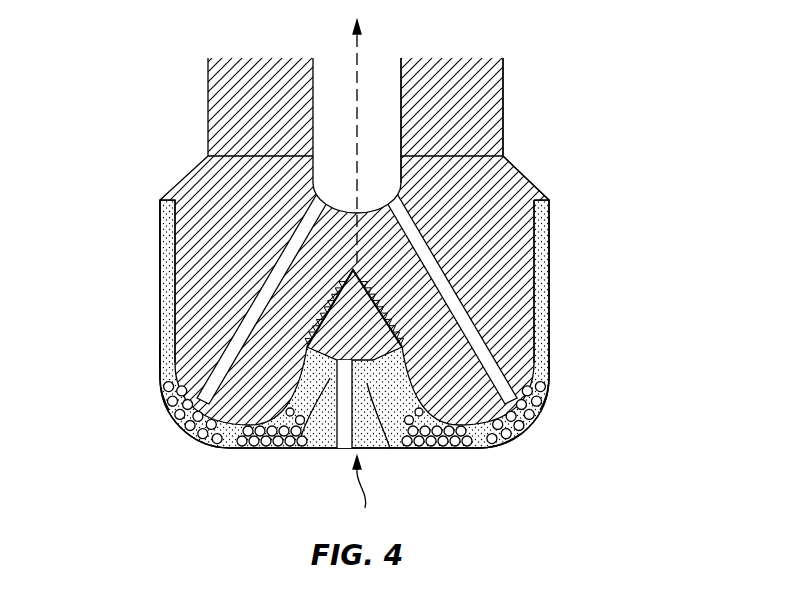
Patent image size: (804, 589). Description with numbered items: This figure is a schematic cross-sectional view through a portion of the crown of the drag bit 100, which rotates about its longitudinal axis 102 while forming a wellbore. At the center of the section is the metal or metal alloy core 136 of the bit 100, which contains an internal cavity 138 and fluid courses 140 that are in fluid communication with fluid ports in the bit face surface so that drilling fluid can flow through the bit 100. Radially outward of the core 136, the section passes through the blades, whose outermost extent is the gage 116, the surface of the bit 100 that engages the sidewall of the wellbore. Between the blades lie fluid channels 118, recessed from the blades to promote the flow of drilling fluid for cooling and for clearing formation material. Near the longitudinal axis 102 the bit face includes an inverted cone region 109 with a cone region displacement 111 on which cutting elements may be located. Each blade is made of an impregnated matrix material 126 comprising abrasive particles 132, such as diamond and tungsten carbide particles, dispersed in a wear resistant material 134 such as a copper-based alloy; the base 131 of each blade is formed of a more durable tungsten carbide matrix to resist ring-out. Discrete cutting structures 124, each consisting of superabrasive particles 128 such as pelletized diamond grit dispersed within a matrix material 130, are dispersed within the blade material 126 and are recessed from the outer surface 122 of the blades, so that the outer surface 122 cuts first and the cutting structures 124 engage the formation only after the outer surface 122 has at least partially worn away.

The drag bit 100 is at (580, 101).
The longitudinal axis 102 is at (358, 113).
The internal cavity 138 is at (392, 149).
The core 136 is at (507, 184).
The fluid courses 140 is at (428, 255).
The base 131 is at (183, 362).
The gage 116 is at (150, 202).
The cone region displacement 111 is at (331, 297).
The fluid channels 118 is at (372, 436).
The cutting structures 124 is at (543, 400).
The matrix material 130 is at (548, 381).
The superabrasive particles 128 is at (548, 393).
The outer surface 122 is at (470, 453).
The wear resistant material 134 is at (163, 349).
The abrasive particles 132 is at (162, 370).
The material 126 is at (160, 378).
The inverted cone region 109 is at (365, 493).